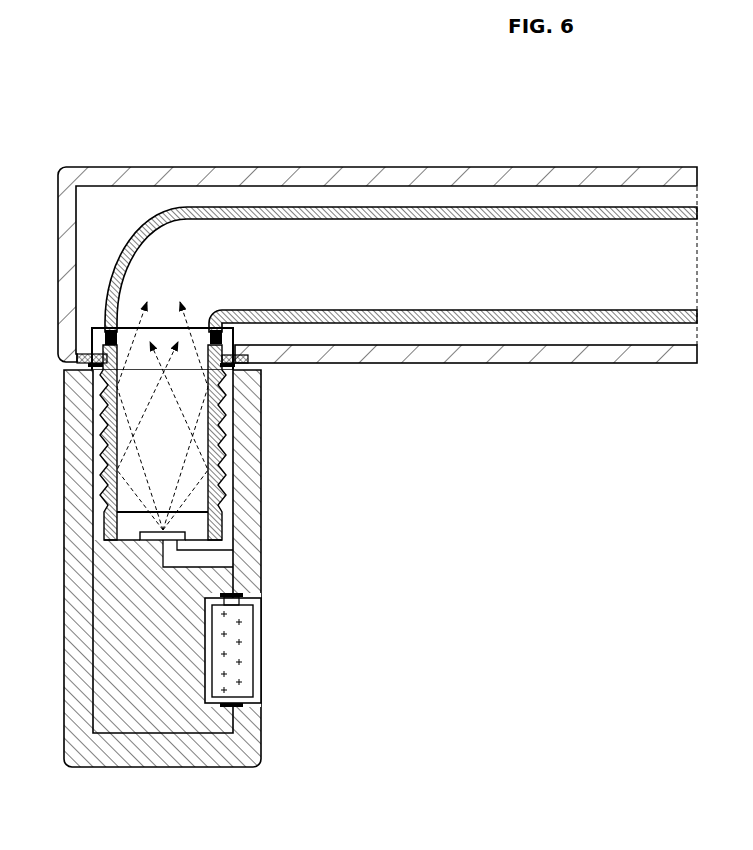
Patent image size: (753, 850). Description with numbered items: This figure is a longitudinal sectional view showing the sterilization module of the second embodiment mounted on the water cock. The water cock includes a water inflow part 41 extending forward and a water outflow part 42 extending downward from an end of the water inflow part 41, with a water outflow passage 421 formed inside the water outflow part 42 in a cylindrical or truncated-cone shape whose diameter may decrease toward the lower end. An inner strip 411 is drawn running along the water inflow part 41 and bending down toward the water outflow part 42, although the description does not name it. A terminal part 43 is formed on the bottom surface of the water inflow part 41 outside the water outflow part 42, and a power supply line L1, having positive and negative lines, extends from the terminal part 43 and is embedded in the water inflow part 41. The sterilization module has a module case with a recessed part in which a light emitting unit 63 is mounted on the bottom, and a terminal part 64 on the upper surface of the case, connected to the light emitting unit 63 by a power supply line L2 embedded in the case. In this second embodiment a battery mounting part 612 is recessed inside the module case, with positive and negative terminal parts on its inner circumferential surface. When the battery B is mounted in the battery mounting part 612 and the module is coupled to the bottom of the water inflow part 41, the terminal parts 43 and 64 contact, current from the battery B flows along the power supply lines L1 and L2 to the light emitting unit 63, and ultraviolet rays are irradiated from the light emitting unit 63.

The water inflow part 41 is at (330, 177).
The display / light guide strip 411 is at (503, 207).
The power supply line L1 is at (103, 325).
The terminal part 43 is at (97, 337).
The terminal part 64 is at (85, 370).
The water outflow passage 421 is at (165, 436).
The water outflow part 42 is at (245, 484).
The power supply line L2 is at (237, 511).
The light emitting unit 63 is at (140, 531).
The battery mounting part 612 is at (260, 636).
The battery B is at (247, 657).